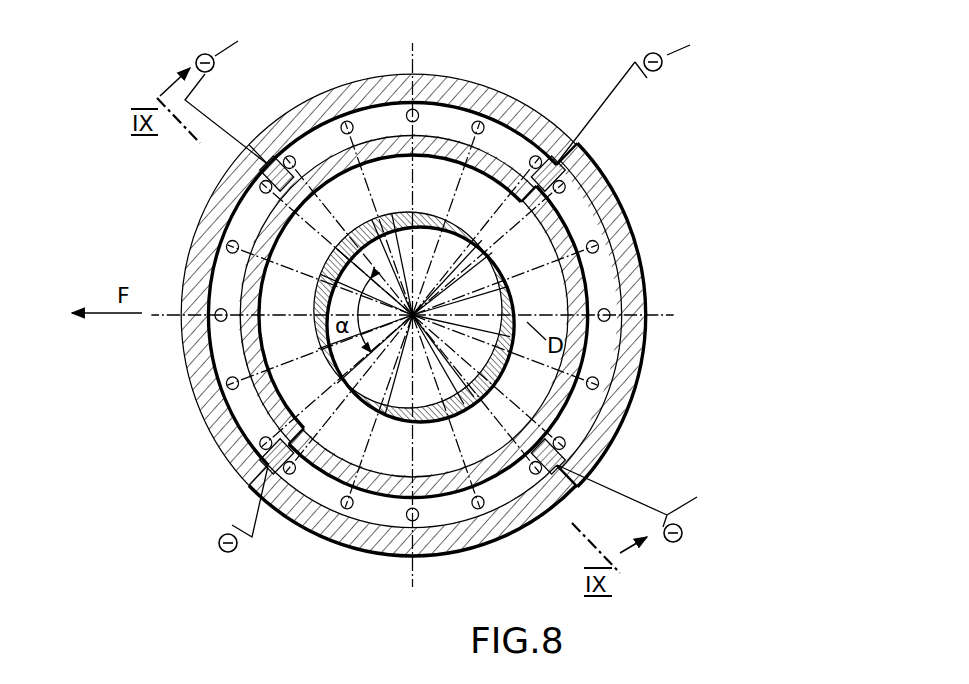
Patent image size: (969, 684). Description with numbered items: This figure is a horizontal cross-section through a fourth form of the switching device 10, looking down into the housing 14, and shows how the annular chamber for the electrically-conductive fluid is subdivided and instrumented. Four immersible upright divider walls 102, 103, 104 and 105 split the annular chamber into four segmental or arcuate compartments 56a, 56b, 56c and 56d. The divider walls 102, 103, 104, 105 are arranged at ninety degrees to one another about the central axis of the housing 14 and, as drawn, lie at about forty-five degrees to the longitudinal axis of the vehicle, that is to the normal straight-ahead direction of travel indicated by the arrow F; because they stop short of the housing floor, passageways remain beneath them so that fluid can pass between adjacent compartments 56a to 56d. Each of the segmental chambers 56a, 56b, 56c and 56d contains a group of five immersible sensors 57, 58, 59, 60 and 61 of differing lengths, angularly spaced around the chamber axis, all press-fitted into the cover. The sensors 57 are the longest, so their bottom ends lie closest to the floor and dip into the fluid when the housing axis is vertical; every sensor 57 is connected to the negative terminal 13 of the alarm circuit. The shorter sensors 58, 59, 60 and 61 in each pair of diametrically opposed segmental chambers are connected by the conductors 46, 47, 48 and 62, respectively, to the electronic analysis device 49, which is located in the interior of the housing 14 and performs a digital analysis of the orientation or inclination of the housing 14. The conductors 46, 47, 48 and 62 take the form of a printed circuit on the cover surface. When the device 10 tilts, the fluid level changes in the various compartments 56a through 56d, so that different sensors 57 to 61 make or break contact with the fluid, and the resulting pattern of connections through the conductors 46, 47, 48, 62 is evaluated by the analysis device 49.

The switching device 10 is at (551, 50).
The negative terminal 13 is at (456, 289).
The housing 14 is at (649, 280).
The conductor 46 is at (460, 215).
The conductor 47 is at (410, 205).
The conductor 48 is at (362, 218).
The electronic analysis device 49 is at (500, 263).
The segmental chamber 56a is at (392, 100).
The segmental chamber 56b is at (582, 215).
The segmental chamber 56c is at (466, 545).
The segmental chamber 56d is at (223, 353).
The immersible sensor 57 is at (537, 156).
The immersible sensor 58 is at (481, 121).
The immersible sensor 59 is at (414, 110).
The immersible sensor 60 is at (344, 121).
The immersible sensor 61 is at (287, 156).
The conductor 62 is at (340, 238).
The immersible divider wall 102 is at (259, 170).
The immersible divider wall 103 is at (562, 163).
The immersible divider wall 104 is at (567, 473).
The immersible divider wall 105 is at (268, 468).